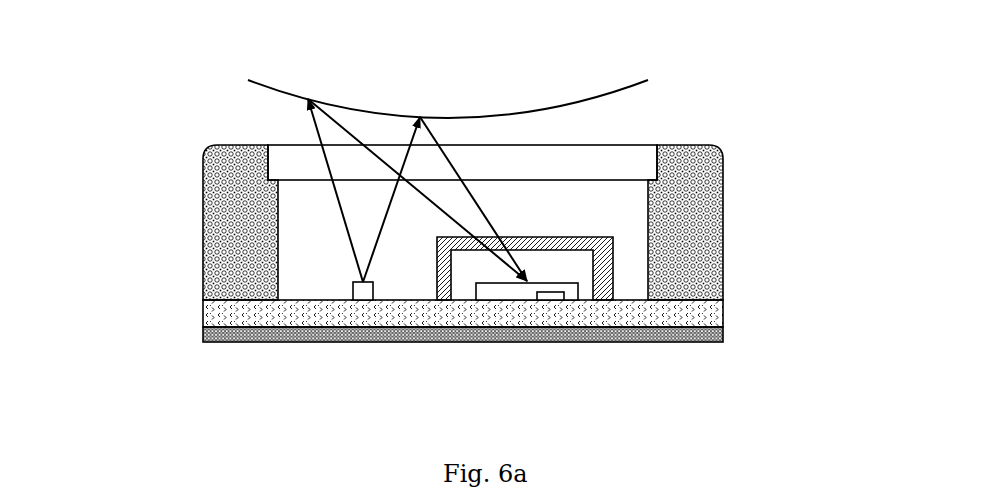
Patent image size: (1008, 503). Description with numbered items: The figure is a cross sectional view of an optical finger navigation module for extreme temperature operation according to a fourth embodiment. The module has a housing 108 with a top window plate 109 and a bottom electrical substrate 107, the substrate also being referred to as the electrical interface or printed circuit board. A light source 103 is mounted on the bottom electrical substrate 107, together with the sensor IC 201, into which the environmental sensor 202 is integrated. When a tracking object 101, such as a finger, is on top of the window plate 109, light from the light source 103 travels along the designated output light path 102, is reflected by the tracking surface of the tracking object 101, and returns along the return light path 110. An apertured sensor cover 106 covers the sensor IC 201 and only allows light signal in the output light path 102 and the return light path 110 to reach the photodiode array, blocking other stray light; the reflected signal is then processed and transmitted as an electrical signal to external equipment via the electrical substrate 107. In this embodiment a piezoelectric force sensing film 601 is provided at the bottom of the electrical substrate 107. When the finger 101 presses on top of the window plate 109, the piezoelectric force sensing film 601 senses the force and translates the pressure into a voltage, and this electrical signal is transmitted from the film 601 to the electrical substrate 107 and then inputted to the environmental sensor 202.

The tracking object 101 is at (173, 34).
The output light path 102 is at (99, 134).
The light source 103 is at (234, 420).
The apertured sensor cover 106 is at (603, 292).
The bottom electrical substrate 107 is at (707, 320).
The housing 108 is at (878, 160).
The top window plate 109 is at (816, 46).
The return light path 110 is at (626, 20).
The sensor IC 201 is at (416, 420).
The environmental sensor 202 is at (596, 424).
The piezoelectric force sensing film 601 is at (218, 342).